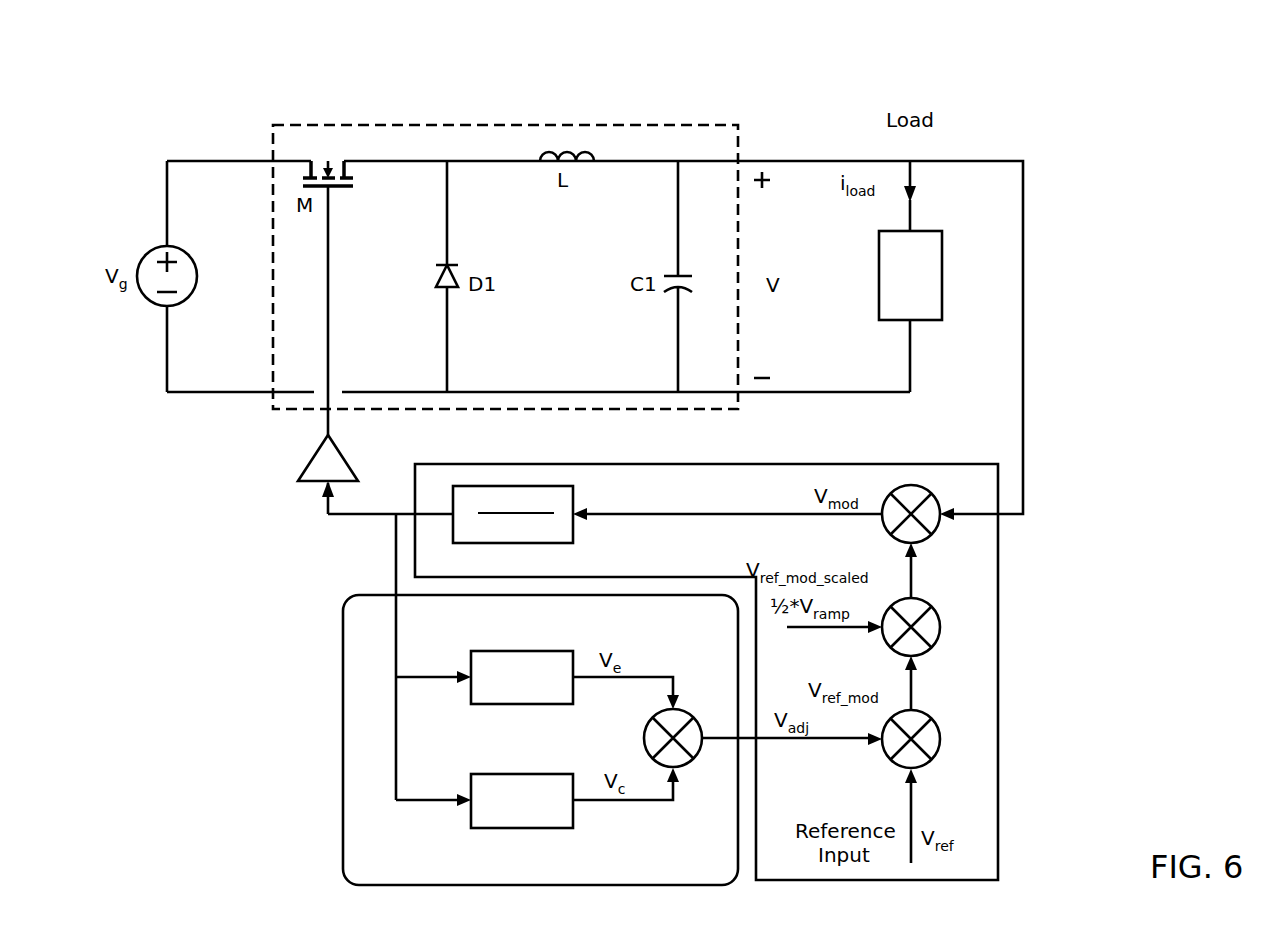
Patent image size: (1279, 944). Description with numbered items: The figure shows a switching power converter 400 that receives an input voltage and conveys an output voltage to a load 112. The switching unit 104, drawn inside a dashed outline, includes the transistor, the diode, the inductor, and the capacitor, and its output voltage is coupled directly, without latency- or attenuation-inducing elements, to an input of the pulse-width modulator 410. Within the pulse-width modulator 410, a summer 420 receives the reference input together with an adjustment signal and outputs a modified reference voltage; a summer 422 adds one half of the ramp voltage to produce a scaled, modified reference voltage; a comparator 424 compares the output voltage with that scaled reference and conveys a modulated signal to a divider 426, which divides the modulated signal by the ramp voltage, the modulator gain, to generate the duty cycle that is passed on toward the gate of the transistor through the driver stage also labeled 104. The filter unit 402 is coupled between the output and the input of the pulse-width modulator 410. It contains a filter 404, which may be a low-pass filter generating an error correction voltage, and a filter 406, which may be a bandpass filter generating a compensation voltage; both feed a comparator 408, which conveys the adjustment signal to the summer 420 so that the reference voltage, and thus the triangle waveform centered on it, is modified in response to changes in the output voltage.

The switching power converter 400 is at (1149, 118).
The switching unit 104 is at (670, 125).
The load 112 is at (924, 231).
The filter unit 402 is at (343, 860).
The filter 404 is at (511, 651).
The filter 406 is at (511, 774).
The comparator 408 is at (661, 712).
The pulse-width modulator 410 is at (999, 739).
The summer 420 is at (886, 756).
The summer 422 is at (886, 646).
The comparator 424 is at (886, 533).
The divider 426 is at (503, 543).